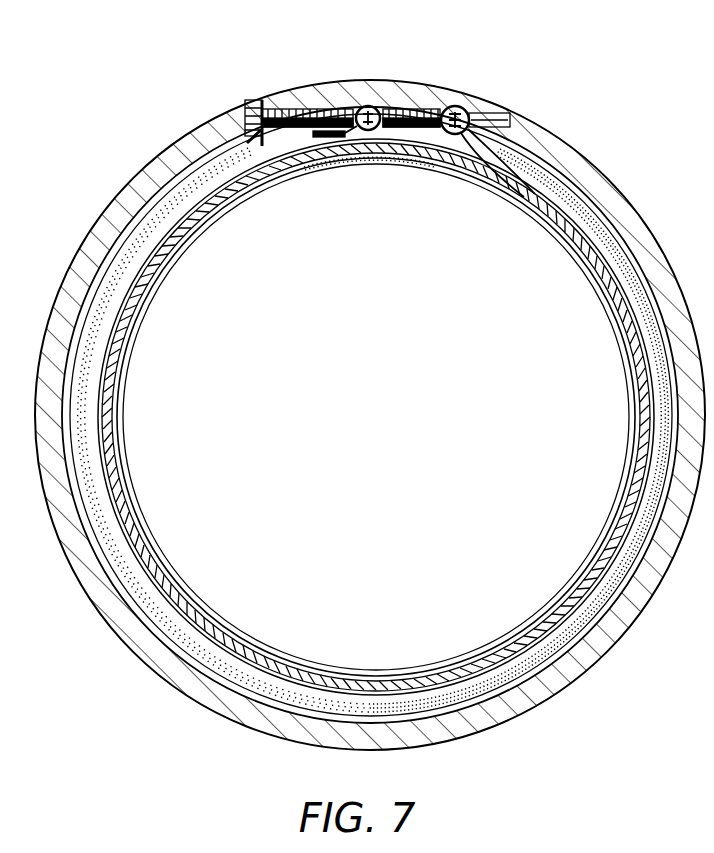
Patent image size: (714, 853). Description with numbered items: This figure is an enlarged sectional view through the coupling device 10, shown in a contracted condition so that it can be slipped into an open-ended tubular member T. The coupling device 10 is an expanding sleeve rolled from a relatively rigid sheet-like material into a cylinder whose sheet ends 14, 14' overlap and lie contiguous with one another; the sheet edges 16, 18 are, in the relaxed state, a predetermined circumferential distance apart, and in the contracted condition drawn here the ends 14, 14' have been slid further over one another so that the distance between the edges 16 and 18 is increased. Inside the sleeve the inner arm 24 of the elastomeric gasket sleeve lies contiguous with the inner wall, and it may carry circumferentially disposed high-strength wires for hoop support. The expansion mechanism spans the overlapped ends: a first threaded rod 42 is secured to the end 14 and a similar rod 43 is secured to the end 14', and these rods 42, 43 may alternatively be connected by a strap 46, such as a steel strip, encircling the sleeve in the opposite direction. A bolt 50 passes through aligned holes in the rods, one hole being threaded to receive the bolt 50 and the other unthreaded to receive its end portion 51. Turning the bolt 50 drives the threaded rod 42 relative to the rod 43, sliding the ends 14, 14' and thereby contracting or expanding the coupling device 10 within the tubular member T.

The tubular member T is at (576, 160).
The coupling device 10 is at (326, 100).
The sheet end 14 is at (376, 417).
The sheet end 14' is at (480, 182).
The sheet edge 16 is at (373, 150).
The sheet edge 18 is at (526, 193).
The inner arm of gasket sleeve 24 is at (540, 620).
The first threaded rod 42 is at (364, 133).
The similar rod 43 is at (477, 108).
The strap 46 is at (520, 663).
The bolt 50 is at (292, 112).
The end portion of bolt 51 is at (447, 107).